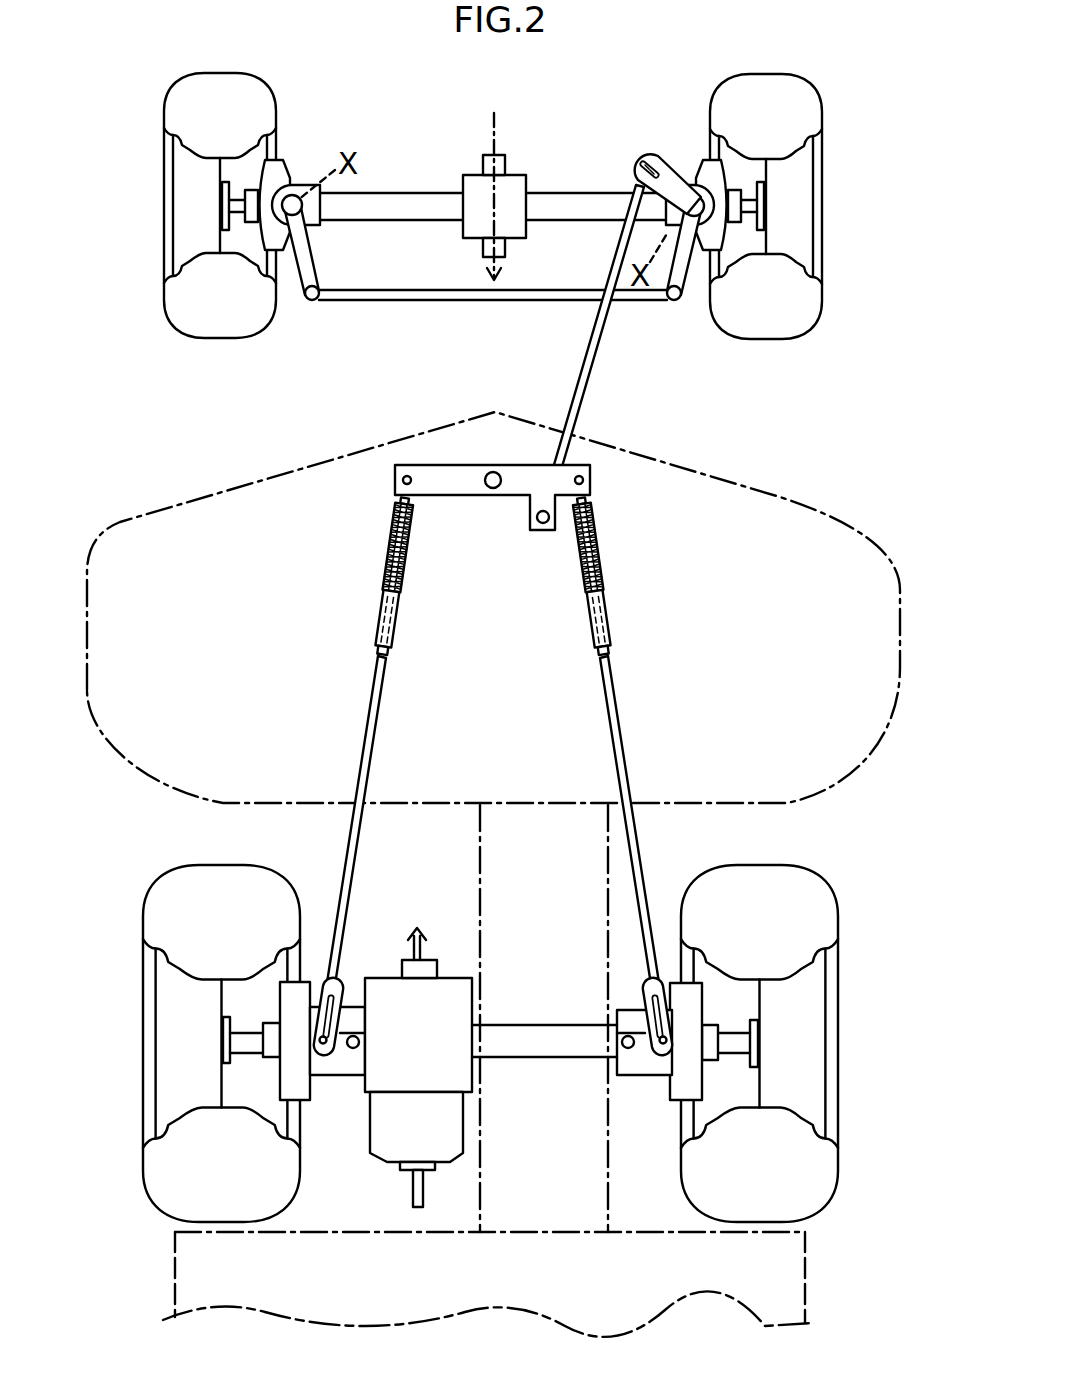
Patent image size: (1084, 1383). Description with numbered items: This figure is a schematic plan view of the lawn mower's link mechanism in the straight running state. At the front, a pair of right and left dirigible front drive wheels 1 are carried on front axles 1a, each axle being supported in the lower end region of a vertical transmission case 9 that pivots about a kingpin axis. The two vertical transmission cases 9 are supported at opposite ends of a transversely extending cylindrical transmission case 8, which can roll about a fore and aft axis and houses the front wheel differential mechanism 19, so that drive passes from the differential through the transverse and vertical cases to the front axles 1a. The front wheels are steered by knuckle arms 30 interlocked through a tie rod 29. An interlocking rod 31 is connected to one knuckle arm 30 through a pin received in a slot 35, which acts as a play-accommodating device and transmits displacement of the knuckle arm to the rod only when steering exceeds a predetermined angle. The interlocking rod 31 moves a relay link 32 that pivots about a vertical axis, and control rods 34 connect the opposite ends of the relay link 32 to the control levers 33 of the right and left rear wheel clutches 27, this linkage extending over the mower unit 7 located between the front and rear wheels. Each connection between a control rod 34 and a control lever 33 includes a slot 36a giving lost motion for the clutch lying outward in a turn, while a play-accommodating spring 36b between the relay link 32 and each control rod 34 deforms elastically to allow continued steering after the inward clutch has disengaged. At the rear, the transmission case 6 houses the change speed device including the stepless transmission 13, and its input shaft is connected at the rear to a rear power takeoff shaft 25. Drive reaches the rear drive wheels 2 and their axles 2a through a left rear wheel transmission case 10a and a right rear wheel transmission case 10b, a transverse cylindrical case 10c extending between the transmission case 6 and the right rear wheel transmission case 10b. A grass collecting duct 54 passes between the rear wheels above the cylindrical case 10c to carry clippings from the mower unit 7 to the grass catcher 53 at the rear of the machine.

The front drive wheel 1 is at (163, 103).
The front axle 1a is at (240, 205).
The rear drive wheel 2 is at (150, 1190).
The rear axle 2a is at (248, 1040).
The transmission case 6 is at (391, 973).
The mower unit 7 is at (778, 492).
The transverse transmission case 8 is at (410, 192).
The vertical transmission case 9 is at (283, 166).
The left rear wheel transmission case 10a is at (289, 1082).
The right rear wheel transmission case 10b is at (697, 1082).
The transverse cylindrical case 10c is at (520, 1060).
The stepless transmission 13 is at (462, 1146).
The front wheel differential mechanism 19 is at (527, 220).
The rear power takeoff shaft 25 is at (412, 1190).
The rear wheel clutch 27 is at (335, 1078).
The tie rod 29 is at (443, 302).
The knuckle arm 30 is at (318, 258).
The interlocking rod 31 is at (600, 376).
The relay link 32 is at (460, 497).
The control lever 33 is at (341, 1052).
The control rod 34 is at (357, 752).
The slot 35 is at (646, 150).
The slot 36a is at (342, 1018).
The play-accommodating spring 36b is at (380, 580).
The grass catcher 53 is at (805, 1287).
The grass collecting duct 54 is at (478, 885).